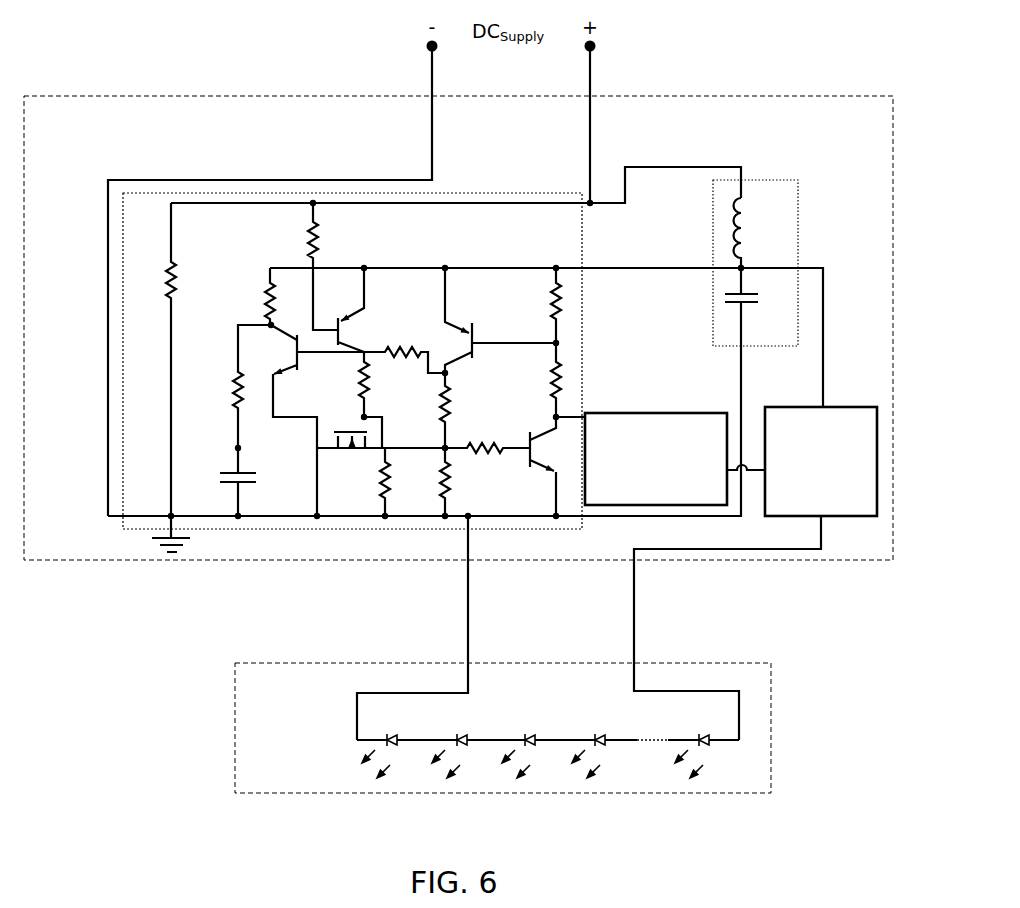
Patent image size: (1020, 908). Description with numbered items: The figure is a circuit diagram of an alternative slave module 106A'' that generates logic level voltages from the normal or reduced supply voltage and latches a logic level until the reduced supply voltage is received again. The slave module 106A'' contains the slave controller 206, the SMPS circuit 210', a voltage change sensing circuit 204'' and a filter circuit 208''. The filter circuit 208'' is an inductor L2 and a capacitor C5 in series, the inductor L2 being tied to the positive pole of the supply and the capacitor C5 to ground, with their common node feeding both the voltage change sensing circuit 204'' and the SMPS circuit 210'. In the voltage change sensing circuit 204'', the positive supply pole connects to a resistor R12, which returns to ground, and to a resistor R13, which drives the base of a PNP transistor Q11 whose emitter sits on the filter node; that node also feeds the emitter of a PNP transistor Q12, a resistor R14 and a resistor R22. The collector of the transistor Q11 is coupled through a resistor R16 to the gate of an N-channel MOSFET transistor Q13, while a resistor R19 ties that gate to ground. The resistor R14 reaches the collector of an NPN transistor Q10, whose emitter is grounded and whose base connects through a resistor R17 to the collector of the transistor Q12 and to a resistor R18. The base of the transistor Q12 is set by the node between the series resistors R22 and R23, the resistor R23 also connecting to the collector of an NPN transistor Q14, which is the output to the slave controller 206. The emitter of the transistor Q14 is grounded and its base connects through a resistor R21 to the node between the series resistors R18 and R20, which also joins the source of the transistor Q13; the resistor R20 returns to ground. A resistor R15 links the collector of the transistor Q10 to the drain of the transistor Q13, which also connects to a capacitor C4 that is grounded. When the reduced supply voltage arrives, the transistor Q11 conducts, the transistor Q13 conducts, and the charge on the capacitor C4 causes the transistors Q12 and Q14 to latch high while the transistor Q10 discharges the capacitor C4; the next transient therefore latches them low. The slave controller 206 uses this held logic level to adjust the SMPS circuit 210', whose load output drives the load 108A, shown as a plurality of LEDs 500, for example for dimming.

The slave module 106A'' is at (458, 328).
The voltage change sensing circuit 204'' is at (308, 361).
The filter circuit 208'' is at (800, 263).
The slave controller 206 is at (656, 459).
The SMPS circuit 210' is at (821, 461).
The load 108A is at (503, 728).
The plurality of LEDs 500 is at (540, 740).
The resistor R12 is at (191, 359).
The resistor R13 is at (300, 265).
The resistor R14 is at (248, 298).
The resistor R15 is at (230, 399).
The resistor R16 is at (342, 386).
The resistor R17 is at (406, 363).
The resistor R18 is at (465, 412).
The resistor R19 is at (362, 483).
The resistor R20 is at (426, 483).
The resistor R21 is at (487, 461).
The resistor R22 is at (535, 305).
The resistor R23 is at (547, 381).
The transistor Q10 is at (303, 422).
The transistor Q11 is at (361, 310).
The transistor Q12 is at (489, 320).
The transistor Q13 is at (381, 428).
The transistor Q14 is at (551, 468).
The capacitor C4 is at (253, 482).
The capacitor C5 is at (757, 290).
The inductor L2 is at (750, 233).